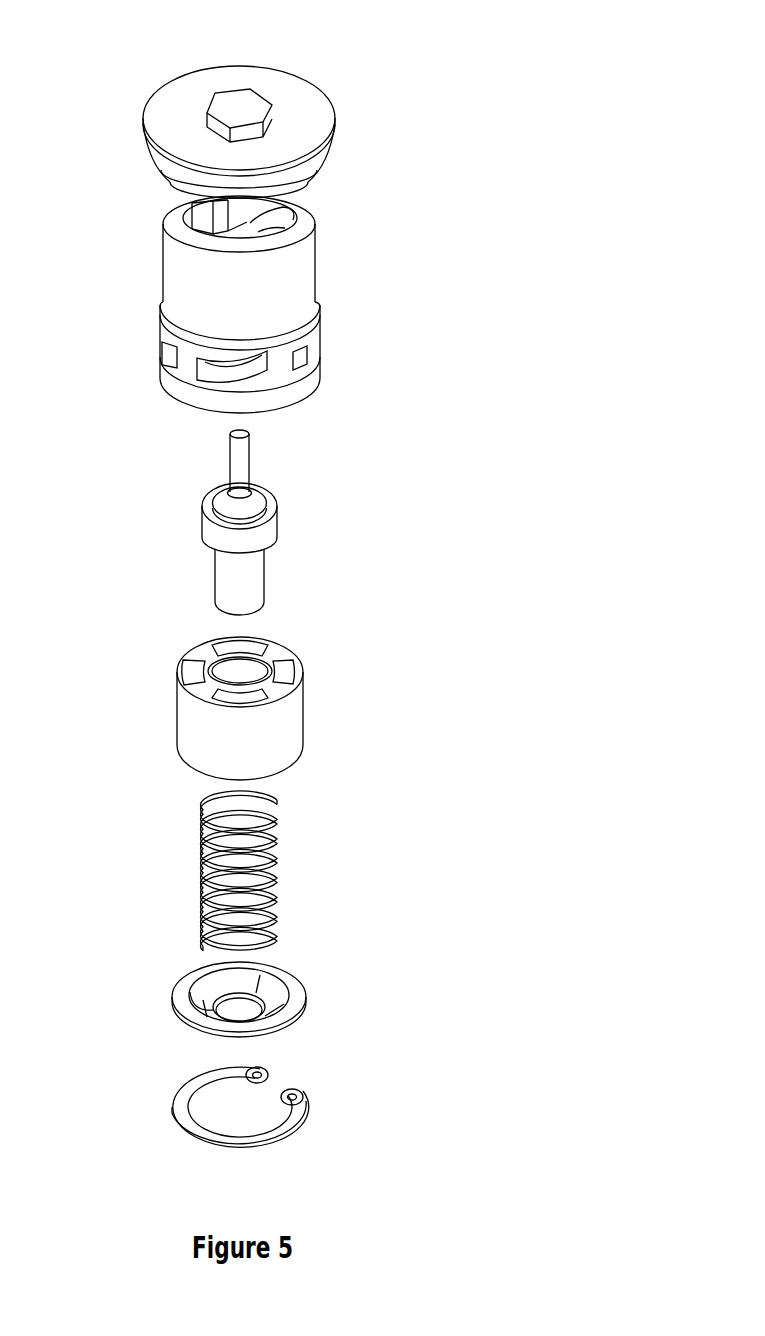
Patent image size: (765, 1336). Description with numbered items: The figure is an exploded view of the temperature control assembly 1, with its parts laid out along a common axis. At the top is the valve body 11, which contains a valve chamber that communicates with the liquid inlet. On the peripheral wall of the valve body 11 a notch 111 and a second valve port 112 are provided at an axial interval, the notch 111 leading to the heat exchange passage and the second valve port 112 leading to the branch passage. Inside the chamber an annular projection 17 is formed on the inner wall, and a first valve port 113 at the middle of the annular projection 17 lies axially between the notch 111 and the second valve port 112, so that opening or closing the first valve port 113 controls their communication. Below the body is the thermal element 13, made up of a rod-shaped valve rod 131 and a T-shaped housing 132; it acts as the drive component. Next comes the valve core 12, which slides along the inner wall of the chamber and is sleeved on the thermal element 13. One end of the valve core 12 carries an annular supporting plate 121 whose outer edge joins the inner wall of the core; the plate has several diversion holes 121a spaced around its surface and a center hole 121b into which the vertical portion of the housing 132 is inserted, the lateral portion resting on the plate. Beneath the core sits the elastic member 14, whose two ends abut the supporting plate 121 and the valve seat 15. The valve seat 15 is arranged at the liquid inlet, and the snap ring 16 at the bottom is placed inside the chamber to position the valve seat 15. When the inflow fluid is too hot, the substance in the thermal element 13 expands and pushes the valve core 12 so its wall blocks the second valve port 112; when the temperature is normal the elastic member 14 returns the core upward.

The temperature control assembly 1 is at (101, 45).
The valve body 11 is at (366, 128).
The notch 111 is at (307, 195).
The second valve port 112 is at (262, 372).
The first valve port 113 is at (252, 221).
The annular projection 17 is at (268, 227).
The thermal element 13 is at (332, 486).
The valve rod 131 is at (248, 464).
The housing 132 is at (228, 476).
The valve core 12 is at (342, 727).
The supporting plate 121 is at (290, 652).
The diversion holes 121a is at (195, 660).
The center hole 121b is at (229, 677).
The elastic member 14 is at (277, 884).
The valve seat 15 is at (180, 1000).
The snap ring 16 is at (200, 1138).